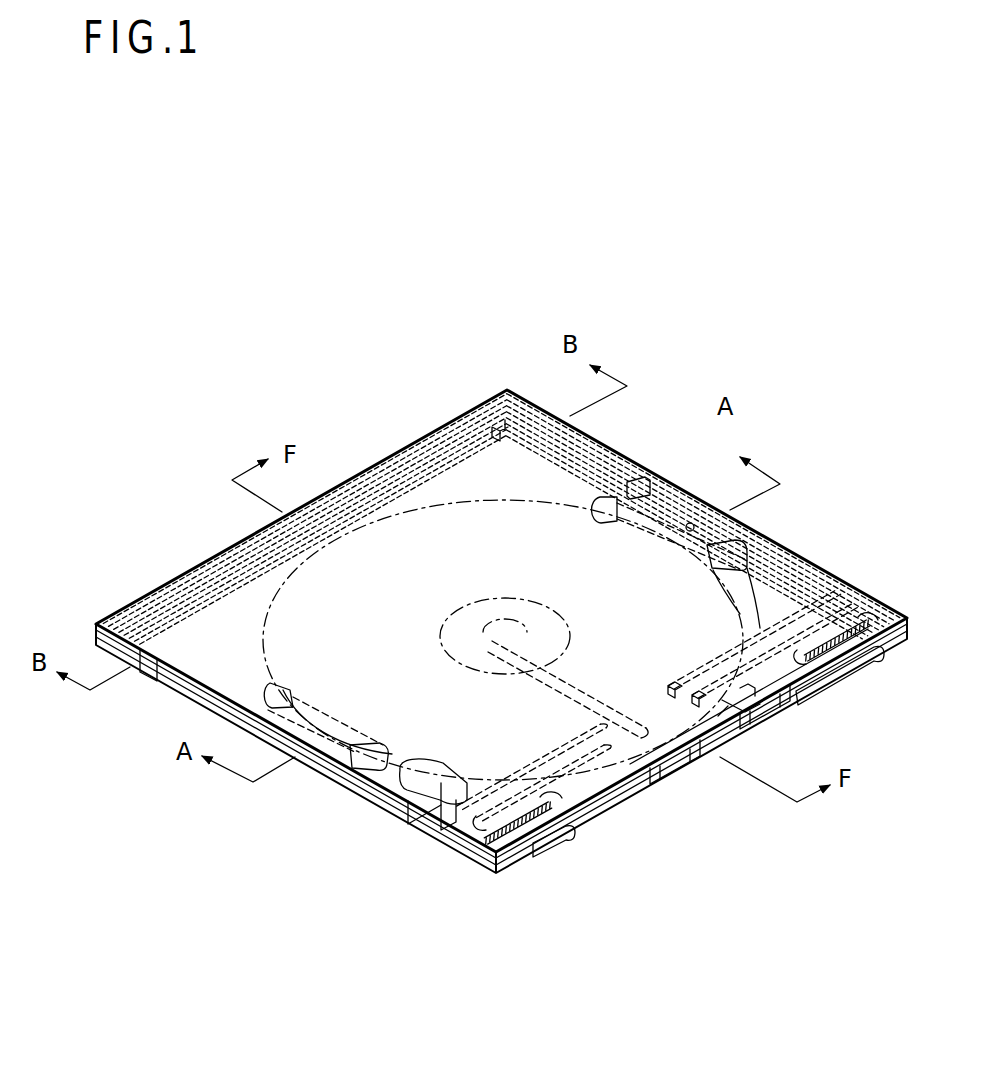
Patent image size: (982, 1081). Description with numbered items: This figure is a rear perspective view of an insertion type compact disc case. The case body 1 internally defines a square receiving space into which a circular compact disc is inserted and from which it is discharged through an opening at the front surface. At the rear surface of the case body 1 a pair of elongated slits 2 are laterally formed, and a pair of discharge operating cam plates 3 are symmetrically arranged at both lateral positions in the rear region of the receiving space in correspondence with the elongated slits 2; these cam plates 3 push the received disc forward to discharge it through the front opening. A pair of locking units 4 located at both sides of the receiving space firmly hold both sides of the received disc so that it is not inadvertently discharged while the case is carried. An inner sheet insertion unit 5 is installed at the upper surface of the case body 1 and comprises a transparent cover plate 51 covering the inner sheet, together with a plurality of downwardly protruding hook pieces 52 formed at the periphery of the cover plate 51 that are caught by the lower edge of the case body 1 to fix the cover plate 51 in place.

The case body 1 is at (378, 812).
The elongated slits 2 is at (675, 790).
The discharge operating cam plates 3 is at (549, 848).
The locking units 4 is at (656, 488).
The inner sheet insertion unit 5 is at (629, 782).
The transparent cover plate 51 is at (410, 824).
The hook pieces 52 is at (450, 836).